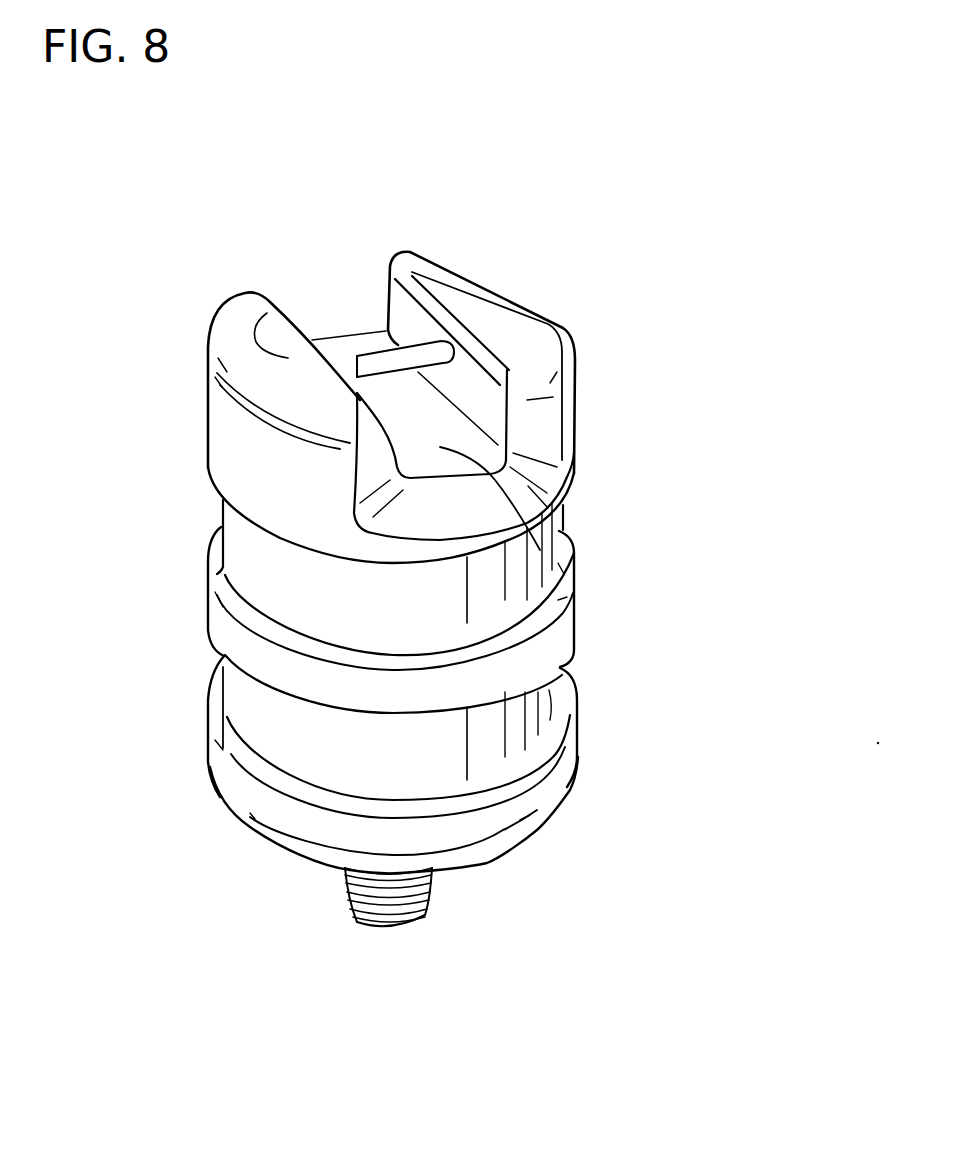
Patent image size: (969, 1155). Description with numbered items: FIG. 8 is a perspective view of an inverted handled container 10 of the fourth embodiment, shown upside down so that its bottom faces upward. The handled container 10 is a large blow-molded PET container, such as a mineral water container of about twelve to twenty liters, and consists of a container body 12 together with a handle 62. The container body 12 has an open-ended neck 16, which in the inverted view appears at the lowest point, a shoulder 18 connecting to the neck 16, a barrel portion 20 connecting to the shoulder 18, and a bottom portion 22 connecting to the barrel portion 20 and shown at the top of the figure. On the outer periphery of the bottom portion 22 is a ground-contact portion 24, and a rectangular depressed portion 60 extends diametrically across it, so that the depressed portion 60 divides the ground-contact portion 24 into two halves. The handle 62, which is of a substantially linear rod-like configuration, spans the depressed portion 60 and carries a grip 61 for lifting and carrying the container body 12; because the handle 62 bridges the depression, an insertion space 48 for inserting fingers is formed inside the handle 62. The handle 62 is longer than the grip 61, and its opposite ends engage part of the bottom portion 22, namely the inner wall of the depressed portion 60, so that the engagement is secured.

The handled container 10 is at (653, 461).
The container body 12 is at (486, 588).
The neck 16 is at (368, 908).
The shoulder 18 is at (470, 862).
The barrel portion 20 is at (486, 748).
The bottom portion 22 is at (485, 230).
The ground-contact portion 24 is at (257, 321).
The insertion space 48 is at (408, 392).
The depressed portion 60 is at (573, 557).
The grip 61 is at (393, 345).
The handle 62 is at (376, 352).